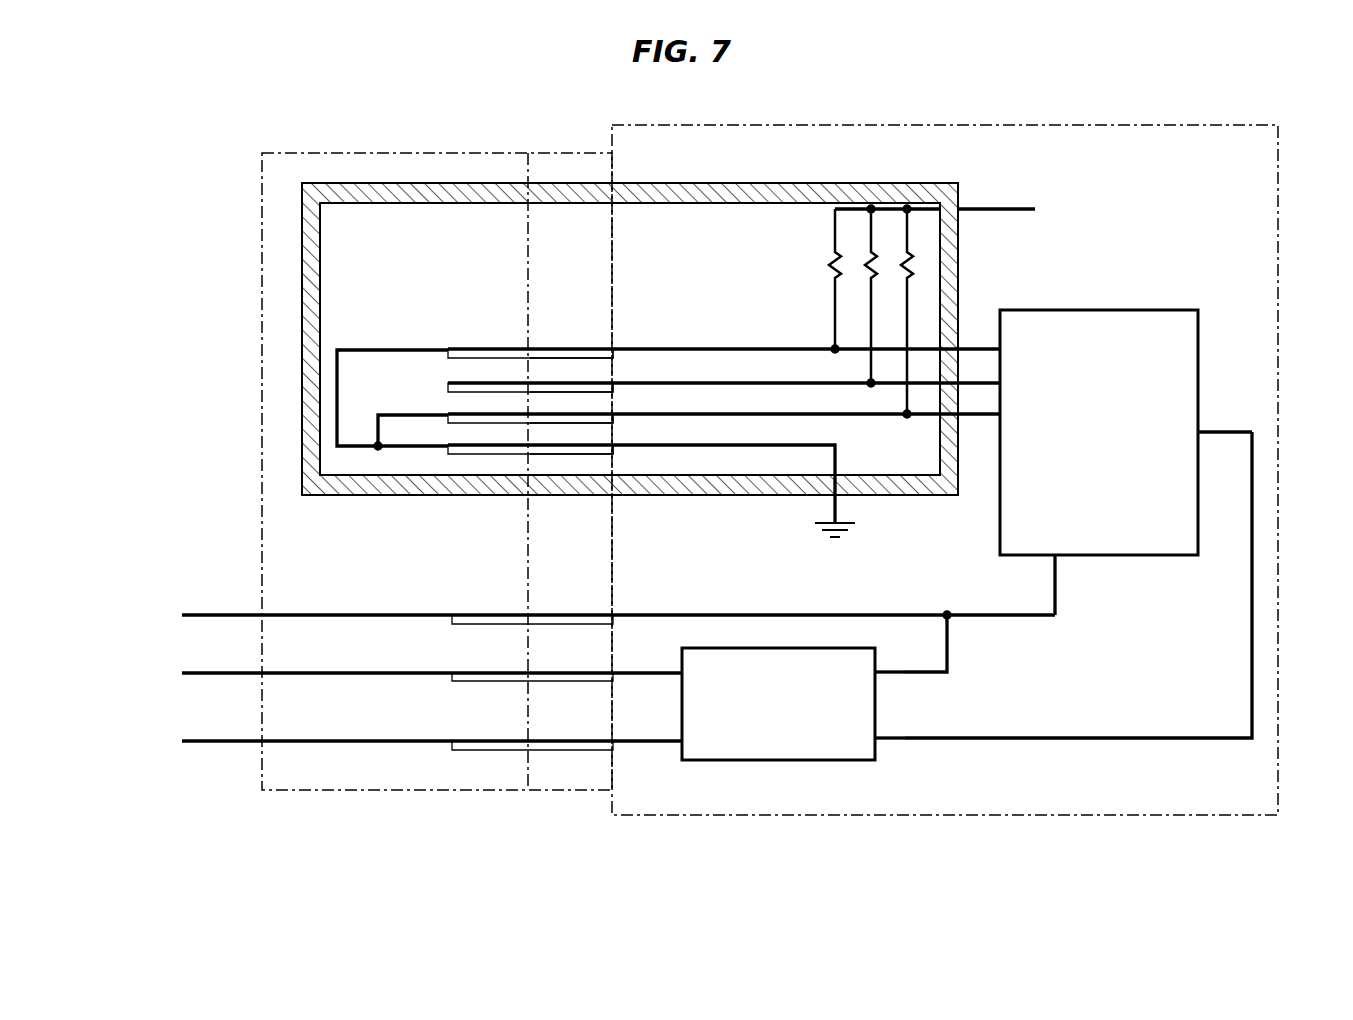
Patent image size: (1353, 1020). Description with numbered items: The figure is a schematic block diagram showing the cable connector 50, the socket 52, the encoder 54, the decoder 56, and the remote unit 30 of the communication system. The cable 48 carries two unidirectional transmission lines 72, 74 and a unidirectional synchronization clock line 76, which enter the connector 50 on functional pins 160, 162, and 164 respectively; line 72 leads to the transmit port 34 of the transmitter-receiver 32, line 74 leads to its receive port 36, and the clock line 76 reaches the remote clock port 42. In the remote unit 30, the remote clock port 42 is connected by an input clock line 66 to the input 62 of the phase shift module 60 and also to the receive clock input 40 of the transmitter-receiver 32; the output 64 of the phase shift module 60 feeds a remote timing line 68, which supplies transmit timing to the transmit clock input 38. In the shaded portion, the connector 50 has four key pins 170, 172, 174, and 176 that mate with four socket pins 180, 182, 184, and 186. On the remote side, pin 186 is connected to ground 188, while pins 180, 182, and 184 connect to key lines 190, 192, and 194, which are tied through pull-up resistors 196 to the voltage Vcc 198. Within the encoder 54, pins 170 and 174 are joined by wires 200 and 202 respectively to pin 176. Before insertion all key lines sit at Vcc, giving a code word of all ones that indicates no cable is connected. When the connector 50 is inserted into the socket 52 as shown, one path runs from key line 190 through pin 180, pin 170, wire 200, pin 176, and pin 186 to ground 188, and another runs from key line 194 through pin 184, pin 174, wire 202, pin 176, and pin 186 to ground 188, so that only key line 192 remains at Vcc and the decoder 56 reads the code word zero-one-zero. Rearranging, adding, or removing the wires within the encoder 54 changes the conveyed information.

The remote unit 30 is at (945, 499).
The transmitter-receiver 32 is at (778, 728).
The transmit port 34 is at (647, 769).
The receive port 36 is at (647, 699).
The transmit clock input 38 is at (909, 760).
The receive clock input 40 is at (903, 692).
The remote clock port 42 is at (519, 700).
The cable 48 is at (740, 485).
The connector 50 is at (437, 472).
The socket 52 is at (553, 472).
The encoder 54 is at (630, 366).
The decoder 56 is at (630, 366).
The phase shift module 60 is at (1099, 461).
The input 62 is at (1082, 585).
The output 64 is at (1225, 404).
The remote timing line 68 is at (1117, 585).
The input clock line 66 is at (834, 641).
The unidirectional transmission line 72 is at (385, 771).
The unidirectional transmission line 74 is at (384, 697).
The unidirectional synchronization clock line 76 is at (382, 640).
The functional pin 160 is at (519, 763).
The functional pin 162 is at (525, 699).
The functional pin 164 is at (528, 639).
The pin 170 is at (526, 325).
The pin 172 is at (503, 370).
The pin 174 is at (504, 401).
The pin 176 is at (505, 486).
The pin 180 is at (571, 324).
The pin 182 is at (591, 356).
The pin 184 is at (607, 390).
The pin 186 is at (605, 435).
The ground 188 is at (734, 500).
The key line 190 is at (806, 320).
The key line 192 is at (806, 366).
The key line 194 is at (806, 399).
The pull-up resistors 196 is at (915, 309).
The voltage Vcc 198 is at (1002, 219).
The wire 200 is at (392, 377).
The wire 202 is at (395, 404).